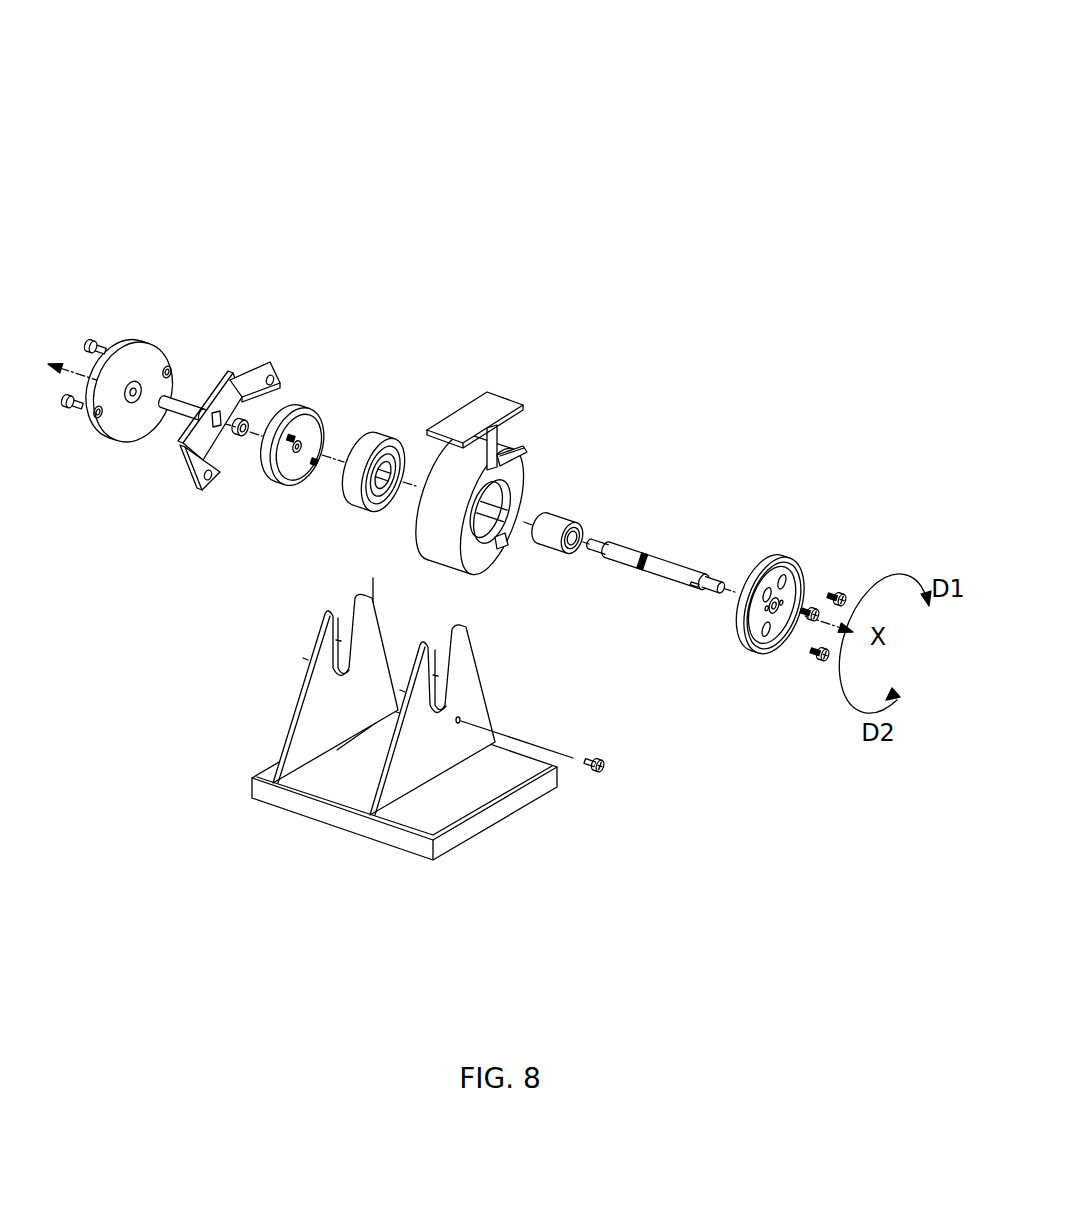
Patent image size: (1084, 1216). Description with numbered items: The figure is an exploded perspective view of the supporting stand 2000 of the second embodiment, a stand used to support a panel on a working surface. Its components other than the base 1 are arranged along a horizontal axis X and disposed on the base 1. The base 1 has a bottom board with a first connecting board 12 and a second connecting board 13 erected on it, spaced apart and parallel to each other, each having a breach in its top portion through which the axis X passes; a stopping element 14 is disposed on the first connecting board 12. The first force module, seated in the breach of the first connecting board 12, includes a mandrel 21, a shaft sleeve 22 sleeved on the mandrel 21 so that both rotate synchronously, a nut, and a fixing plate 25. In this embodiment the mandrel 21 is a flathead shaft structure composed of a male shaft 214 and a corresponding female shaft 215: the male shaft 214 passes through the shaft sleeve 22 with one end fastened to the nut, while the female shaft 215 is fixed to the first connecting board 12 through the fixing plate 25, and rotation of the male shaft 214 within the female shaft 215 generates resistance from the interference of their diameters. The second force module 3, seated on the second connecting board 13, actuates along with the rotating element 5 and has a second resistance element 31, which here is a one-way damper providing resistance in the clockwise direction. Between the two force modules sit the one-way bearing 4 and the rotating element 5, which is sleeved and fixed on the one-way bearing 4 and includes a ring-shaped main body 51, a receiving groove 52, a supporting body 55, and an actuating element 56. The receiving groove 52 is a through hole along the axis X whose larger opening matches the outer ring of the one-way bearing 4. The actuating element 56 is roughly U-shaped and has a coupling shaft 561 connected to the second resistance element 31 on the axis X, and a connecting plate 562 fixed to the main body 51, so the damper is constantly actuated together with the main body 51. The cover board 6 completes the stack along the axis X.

The supporting stand 2000 is at (519, 40).
The base 1 is at (473, 800).
The first connecting board 12 is at (468, 692).
The second connecting board 13 is at (310, 710).
The stopping element 14 is at (598, 760).
The mandrel 21 is at (656, 506).
The male shaft 214 is at (630, 553).
The female shaft 215 is at (690, 535).
The shaft sleeve 22 is at (575, 526).
The fixing plate 25 is at (778, 575).
The second force module 3 is at (122, 345).
The second resistance element 31 is at (113, 337).
The one-way bearing 4 is at (386, 445).
The rotating element 5 is at (398, 423).
The main body 51 is at (432, 514).
The receiving groove 52 is at (484, 520).
The supporting body 55 is at (477, 439).
The actuating element 56 is at (223, 379).
The coupling shaft 561 is at (187, 395).
The connecting plate 562 is at (229, 406).
The cover board 6 is at (298, 412).